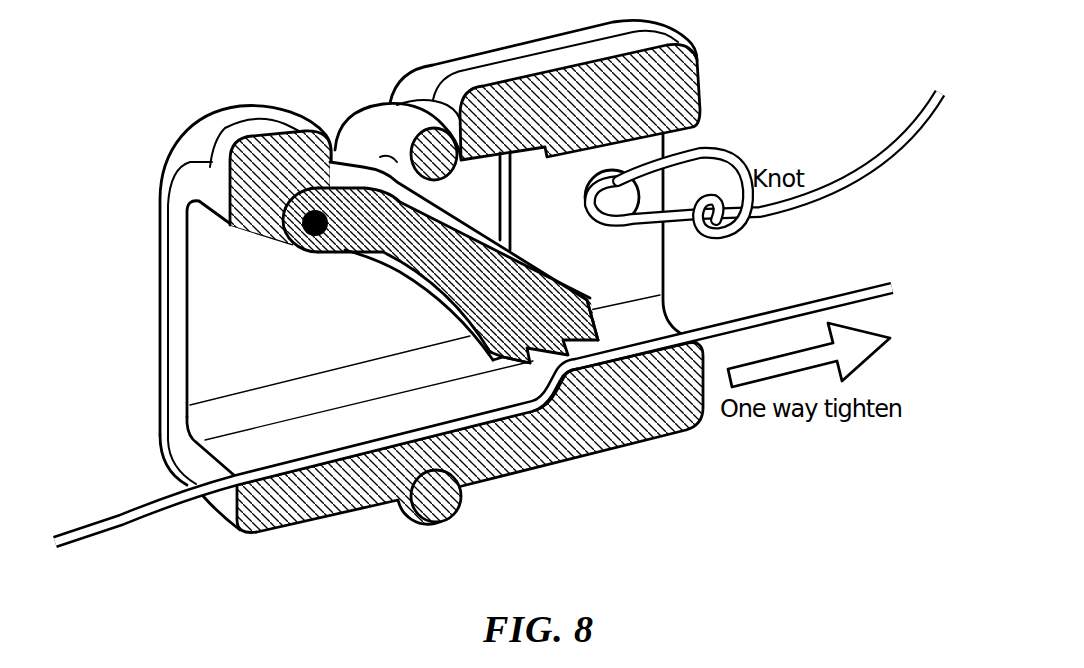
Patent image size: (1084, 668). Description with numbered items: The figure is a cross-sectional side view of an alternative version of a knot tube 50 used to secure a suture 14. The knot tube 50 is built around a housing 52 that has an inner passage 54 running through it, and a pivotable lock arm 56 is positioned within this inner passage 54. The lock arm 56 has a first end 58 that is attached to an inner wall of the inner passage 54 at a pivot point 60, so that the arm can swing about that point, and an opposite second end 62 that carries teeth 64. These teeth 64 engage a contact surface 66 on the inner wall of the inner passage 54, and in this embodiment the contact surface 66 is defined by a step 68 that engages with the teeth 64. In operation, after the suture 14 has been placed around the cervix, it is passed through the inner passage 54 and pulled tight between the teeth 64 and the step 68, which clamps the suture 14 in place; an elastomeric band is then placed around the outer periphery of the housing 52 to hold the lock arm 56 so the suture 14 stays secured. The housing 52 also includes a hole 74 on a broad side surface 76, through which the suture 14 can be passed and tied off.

The suture 14 is at (118, 525).
The knot tube 50 is at (394, 45).
The housing 52 is at (330, 477).
The inner passage 54 is at (246, 345).
The lock arm 56 is at (583, 297).
The first end 58 is at (312, 250).
The pivot point 60 is at (308, 234).
The second end 62 is at (507, 343).
The teeth 64 is at (600, 338).
The contact surface 66 is at (581, 349).
The step 68 is at (558, 386).
The hole 74 is at (618, 187).
The side surface 76 is at (563, 251).